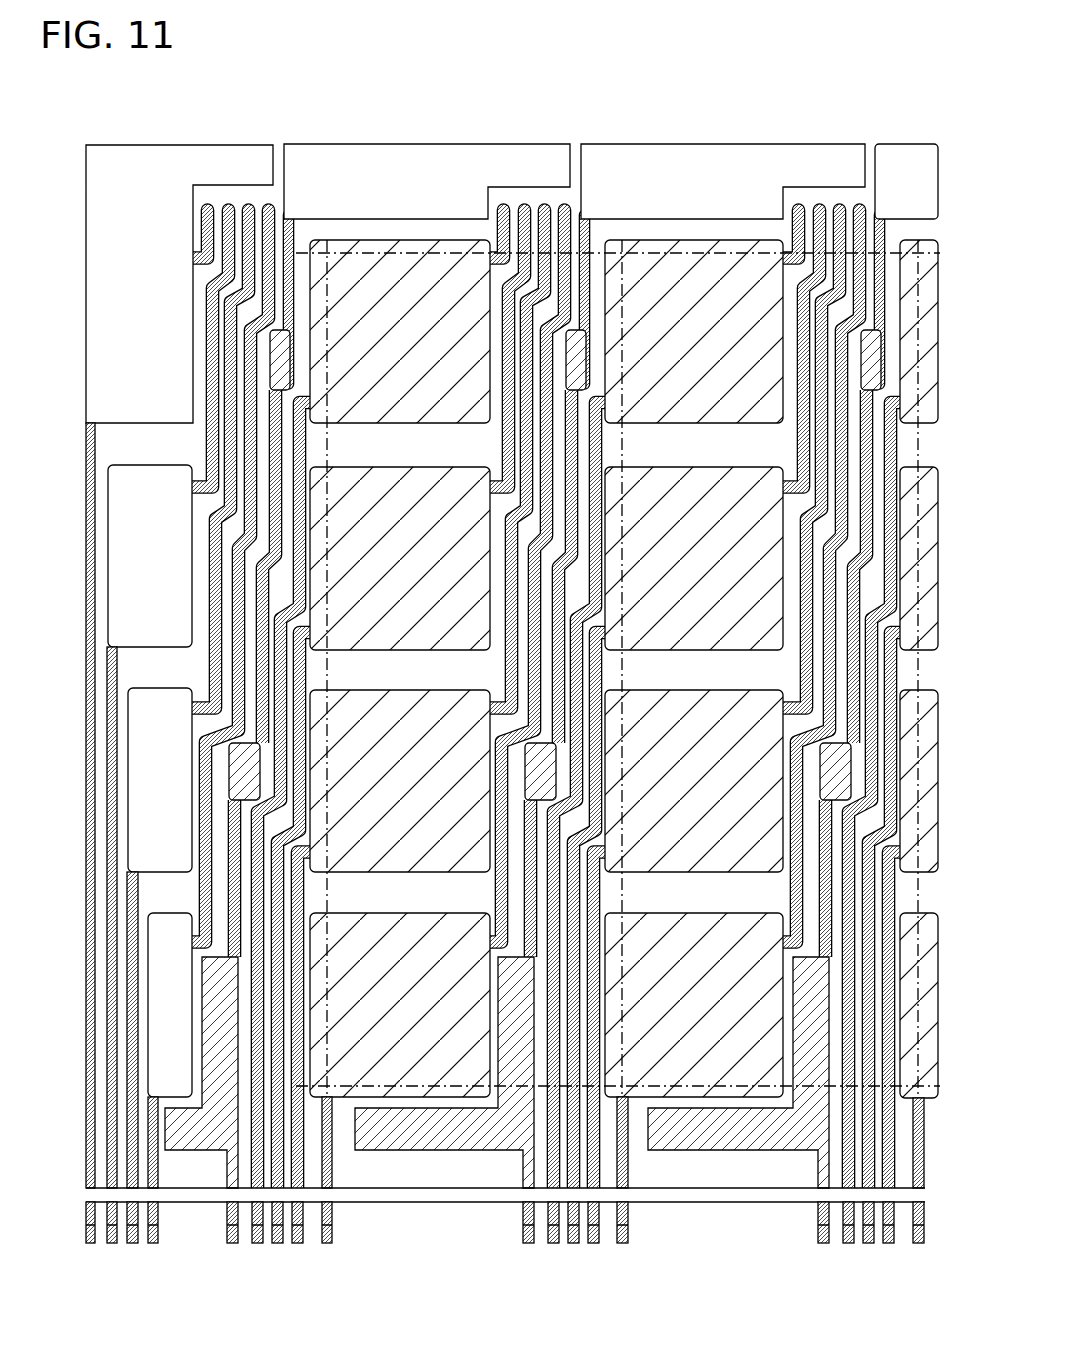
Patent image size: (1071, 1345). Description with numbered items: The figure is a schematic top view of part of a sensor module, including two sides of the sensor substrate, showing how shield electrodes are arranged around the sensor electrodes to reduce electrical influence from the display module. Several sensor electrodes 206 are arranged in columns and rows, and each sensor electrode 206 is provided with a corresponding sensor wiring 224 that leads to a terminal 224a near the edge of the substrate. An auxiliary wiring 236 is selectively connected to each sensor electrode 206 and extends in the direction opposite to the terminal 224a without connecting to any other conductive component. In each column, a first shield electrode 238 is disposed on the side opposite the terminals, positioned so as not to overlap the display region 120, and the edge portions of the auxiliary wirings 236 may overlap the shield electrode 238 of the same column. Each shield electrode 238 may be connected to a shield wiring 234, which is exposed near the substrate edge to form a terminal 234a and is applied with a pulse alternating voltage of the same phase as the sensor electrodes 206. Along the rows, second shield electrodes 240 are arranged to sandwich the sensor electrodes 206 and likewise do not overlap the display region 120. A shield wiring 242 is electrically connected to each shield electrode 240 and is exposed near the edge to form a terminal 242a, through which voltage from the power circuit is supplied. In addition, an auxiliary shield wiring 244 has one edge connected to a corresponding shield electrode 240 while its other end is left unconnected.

The display region 120 is at (362, 242).
The sensor electrode 206 is at (400, 408).
The sensor wiring 224 is at (333, 1170).
The terminal 224a is at (329, 1244).
The shield wiring 234 is at (291, 356).
The terminal 234a is at (233, 1244).
The auxiliary wiring 236 is at (500, 330).
The shield electrode 238 is at (426, 160).
The shield electrode 240 is at (150, 160).
The shield wiring 242 is at (95, 548).
The terminal 242a is at (153, 1244).
The auxiliary shield wiring 244 is at (207, 446).